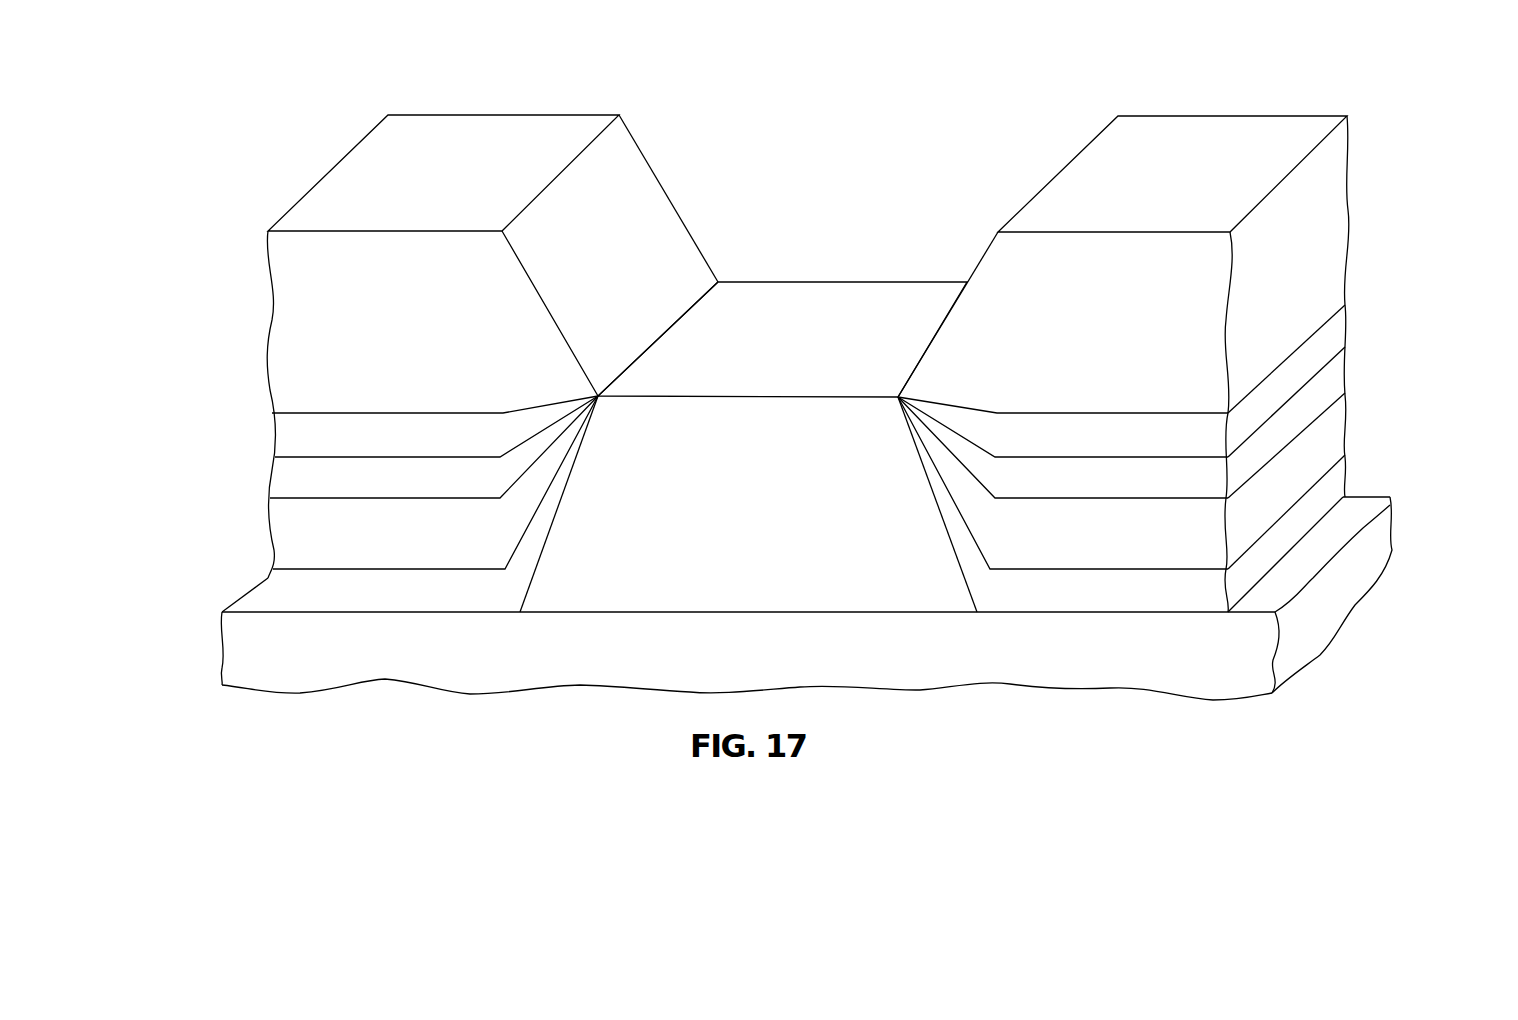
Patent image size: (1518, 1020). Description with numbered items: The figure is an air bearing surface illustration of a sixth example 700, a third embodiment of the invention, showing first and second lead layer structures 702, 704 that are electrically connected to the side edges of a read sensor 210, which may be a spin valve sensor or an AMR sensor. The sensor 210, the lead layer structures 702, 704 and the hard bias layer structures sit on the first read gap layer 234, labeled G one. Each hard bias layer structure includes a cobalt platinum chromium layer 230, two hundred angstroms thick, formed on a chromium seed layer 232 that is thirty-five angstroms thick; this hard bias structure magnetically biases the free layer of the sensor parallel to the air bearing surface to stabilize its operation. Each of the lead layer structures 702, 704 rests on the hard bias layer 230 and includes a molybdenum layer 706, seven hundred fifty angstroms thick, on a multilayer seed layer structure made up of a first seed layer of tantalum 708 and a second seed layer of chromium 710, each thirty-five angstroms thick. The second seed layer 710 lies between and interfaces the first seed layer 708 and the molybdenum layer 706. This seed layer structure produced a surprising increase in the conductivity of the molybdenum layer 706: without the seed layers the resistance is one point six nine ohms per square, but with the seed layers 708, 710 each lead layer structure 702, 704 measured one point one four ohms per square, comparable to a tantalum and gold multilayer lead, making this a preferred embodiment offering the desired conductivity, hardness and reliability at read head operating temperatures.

The sixth example 700 is at (903, 102).
The read sensor 210 is at (794, 305).
The first lead layer structure 702 is at (498, 143).
The second lead layer structure 704 is at (1213, 143).
The molybdenum (Mo) layer 706 is at (278, 352).
The second seed layer of chromium (Cr) 710 is at (283, 438).
The first seed layer of tantalum (Ta) 708 is at (278, 475).
The cobalt platinum chromium (CoPtCr) layer 230 is at (278, 522).
The chromium (Cr) seed layer 232 is at (278, 590).
The first read gap layer (G1) 234 is at (1363, 573).